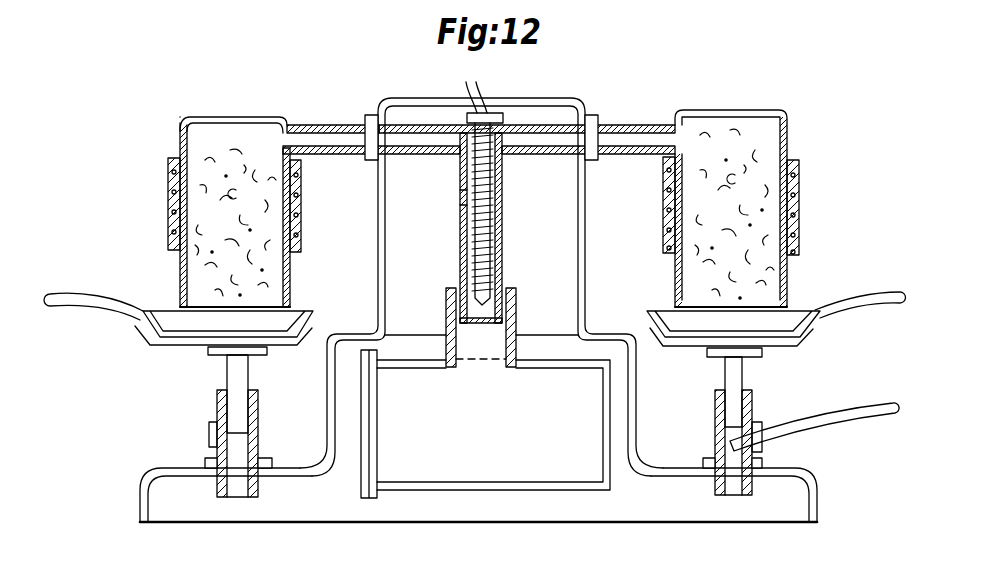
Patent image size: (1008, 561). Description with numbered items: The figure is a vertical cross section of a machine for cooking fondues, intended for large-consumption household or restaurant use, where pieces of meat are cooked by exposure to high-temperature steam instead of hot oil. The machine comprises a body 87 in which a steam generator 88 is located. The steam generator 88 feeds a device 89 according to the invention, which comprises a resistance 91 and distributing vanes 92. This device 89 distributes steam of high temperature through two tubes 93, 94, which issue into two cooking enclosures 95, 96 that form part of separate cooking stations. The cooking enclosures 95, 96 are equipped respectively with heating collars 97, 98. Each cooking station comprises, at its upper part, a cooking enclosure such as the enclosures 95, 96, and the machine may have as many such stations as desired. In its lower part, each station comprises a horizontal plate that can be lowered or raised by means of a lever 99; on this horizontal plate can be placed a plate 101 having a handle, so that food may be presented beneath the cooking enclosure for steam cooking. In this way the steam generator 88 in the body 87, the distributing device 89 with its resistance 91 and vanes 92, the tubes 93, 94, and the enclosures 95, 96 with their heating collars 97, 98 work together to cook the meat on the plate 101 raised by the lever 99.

The body 87 is at (638, 398).
The steam generator 88 is at (558, 477).
The device 89 is at (502, 228).
The resistance 91 is at (503, 184).
The distributing vanes 92 is at (467, 207).
The tube 93 is at (325, 125).
The tube 94 is at (641, 123).
The cooking enclosure 95 is at (208, 117).
The cooking enclosure 96 is at (761, 110).
The heating collar 97 is at (168, 176).
The heating collar 98 is at (800, 188).
The lever 99 is at (868, 413).
The plate 101 is at (788, 323).